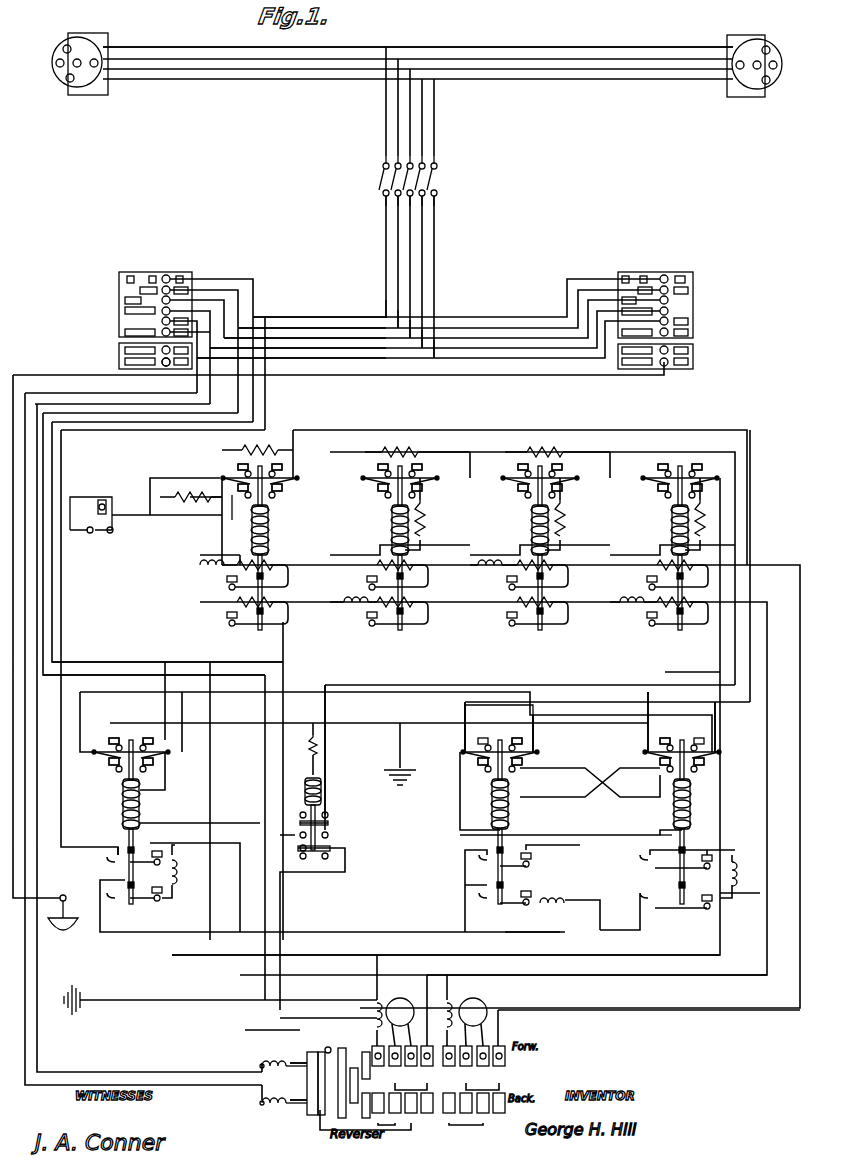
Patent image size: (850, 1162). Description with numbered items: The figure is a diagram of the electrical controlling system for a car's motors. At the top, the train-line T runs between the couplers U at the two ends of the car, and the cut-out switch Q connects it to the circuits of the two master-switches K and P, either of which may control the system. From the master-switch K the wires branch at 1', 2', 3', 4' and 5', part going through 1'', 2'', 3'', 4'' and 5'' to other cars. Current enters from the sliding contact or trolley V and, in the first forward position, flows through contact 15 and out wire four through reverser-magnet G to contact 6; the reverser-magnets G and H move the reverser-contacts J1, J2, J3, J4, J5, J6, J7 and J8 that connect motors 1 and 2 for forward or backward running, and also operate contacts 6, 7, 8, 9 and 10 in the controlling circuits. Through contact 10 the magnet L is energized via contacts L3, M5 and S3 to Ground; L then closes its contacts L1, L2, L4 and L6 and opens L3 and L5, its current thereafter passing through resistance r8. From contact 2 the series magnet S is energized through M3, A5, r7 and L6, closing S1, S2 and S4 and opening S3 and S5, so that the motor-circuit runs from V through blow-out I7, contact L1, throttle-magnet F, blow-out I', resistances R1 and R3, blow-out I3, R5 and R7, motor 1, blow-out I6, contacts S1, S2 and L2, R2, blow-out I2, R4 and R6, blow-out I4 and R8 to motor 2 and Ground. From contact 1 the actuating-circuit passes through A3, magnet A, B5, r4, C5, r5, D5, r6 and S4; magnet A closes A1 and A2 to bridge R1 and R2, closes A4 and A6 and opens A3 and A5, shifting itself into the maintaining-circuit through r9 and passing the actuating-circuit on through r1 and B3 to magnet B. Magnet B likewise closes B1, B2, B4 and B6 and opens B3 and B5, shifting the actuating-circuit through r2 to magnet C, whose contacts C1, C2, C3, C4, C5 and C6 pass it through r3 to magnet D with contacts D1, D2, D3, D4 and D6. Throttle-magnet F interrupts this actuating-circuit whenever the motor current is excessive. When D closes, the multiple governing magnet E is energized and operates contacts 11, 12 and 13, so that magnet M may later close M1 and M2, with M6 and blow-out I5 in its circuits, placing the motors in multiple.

The couplers U is at (413, 65).
The train-line T is at (418, 36).
The cut-out switch Q is at (418, 181).
The master-switch K is at (143, 304).
The master-switch P is at (665, 304).
The master-switch contact 15 is at (163, 366).
The branch point of wire 1 1' is at (319, 309).
The branch point of wire 2 2' is at (312, 321).
The branch point of wire 3 3' is at (305, 332).
The branch point of wire 4 4' is at (298, 343).
The train wire 5' is at (291, 356).
The conductor 1'' is at (378, 309).
The train-line branch of wire 2 2'' is at (392, 319).
The conductor 3'' is at (403, 329).
The train-line branch of wire 4 4'' is at (414, 339).
The conductor 5'' is at (426, 349).
The throttle-magnet F is at (91, 505).
The controlling electromagnet A is at (260, 547).
The controlling electromagnet B is at (400, 547).
The controlling electromagnet C is at (540, 547).
The controlling electromagnet D is at (680, 547).
The compensating resistance r1 is at (257, 443).
The compensating resistance r2 is at (417, 446).
The compensating resistance r3 is at (557, 446).
The compensating resistance r4 is at (425, 520).
The compensating resistance r5 is at (565, 520).
The compensating resistance r6 is at (705, 520).
The compensating resistance r7 is at (191, 491).
The compensating resistance r8 is at (304, 745).
The compensating resistance r9 is at (226, 507).
The motor-circuit contact A1 is at (224, 583).
The motor-circuit contact A2 is at (228, 624).
The auxiliary switch A3 is at (240, 503).
The auxiliary switch A4 is at (234, 466).
The auxiliary switch A5 is at (282, 488).
The auxiliary switch A6 is at (269, 466).
The motor-circuit contact B1 is at (363, 583).
The motor-circuit contact B2 is at (368, 624).
The auxiliary switch B3 is at (380, 491).
The auxiliary switch B4 is at (392, 466).
The auxiliary switch B5 is at (422, 488).
The auxiliary switch B6 is at (424, 466).
The motor-circuit contact C1 is at (505, 583).
The motor-circuit contact C2 is at (503, 623).
The auxiliary switch C3 is at (514, 495).
The auxiliary switch C4 is at (509, 468).
The auxiliary switch C5 is at (562, 488).
The auxiliary switch C6 is at (565, 466).
The motor-circuit contact D1 is at (643, 583).
The motor-circuit contact D2 is at (645, 625).
The auxiliary switch D3 is at (655, 494).
The auxiliary switch D4 is at (648, 470).
The auxiliary switch D5 is at (702, 488).
The auxiliary switch D6 is at (705, 464).
The motor-circuit resistance R1 is at (254, 559).
The motor-circuit resistance R2 is at (244, 598).
The motor-circuit resistance R3 is at (385, 560).
The motor-circuit resistance R4 is at (405, 598).
The motor-circuit resistance R5 is at (525, 560).
The motor-circuit resistance R6 is at (545, 598).
The motor-circuit resistance R7 is at (665, 560).
The motor-circuit resistance R8 is at (685, 598).
The blow-out magnet I' is at (218, 556).
The blow-out magnet I2 is at (353, 610).
The blow-out magnet I3 is at (493, 573).
The blow-out magnet I4 is at (633, 610).
The blow-out magnet I5 is at (560, 904).
The blow-out magnet I6 is at (736, 880).
The blow-out magnet I7 is at (182, 872).
The line magnet L is at (131, 821).
The motor-circuit contact L1 is at (156, 852).
The motor-circuit contact L2 is at (160, 900).
The auxiliary switch L3 is at (110, 765).
The auxiliary switch L4 is at (109, 740).
The auxiliary switch L5 is at (152, 770).
The auxiliary switch L6 is at (146, 735).
The sliding contact or trolley V is at (65, 912).
The multiple governing magnet E is at (305, 814).
The governing-magnet contact 11 is at (314, 858).
The governing-magnet contact 12 is at (309, 831).
The governing-magnet contact 13 is at (310, 814).
The ground Ground is at (402, 796).
The multiple magnet M is at (500, 804).
The main contact M1 is at (531, 856).
The main contact M2 is at (518, 902).
The auxiliary switch M3 is at (474, 766).
The auxiliary switch M5 is at (520, 765).
The auxiliary switch M6 is at (505, 738).
The series magnet S is at (682, 821).
The main contact S1 is at (710, 851).
The main contact S2 is at (706, 908).
The auxiliary switch S3 is at (660, 772).
The auxiliary switch S4 is at (675, 738).
The auxiliary switch S5 is at (706, 764).
The ground Gr is at (62, 1000).
The reverser-magnet G is at (284, 1053).
The reverser-magnet H is at (284, 1111).
The reverser contact 6 is at (307, 1077).
The reverser contact 7 is at (365, 1052).
The reverser contact 8 is at (326, 1047).
The reverser contact 9 is at (350, 1050).
The reverser contact 10 is at (354, 1068).
The master-switch contact 1 is at (467, 1012).
The master-switch contact 2 is at (395, 1012).
The reverser-contact J1 is at (506, 1079).
The reverser-contact J2 is at (484, 1079).
The reverser-contact J3 is at (466, 1079).
The reverser-contact J4 is at (449, 1079).
The reverser-contact J5 is at (428, 1079).
The reverser-contact J6 is at (411, 1079).
The reverser-contact J7 is at (395, 1079).
The reverser-contact J8 is at (378, 1079).